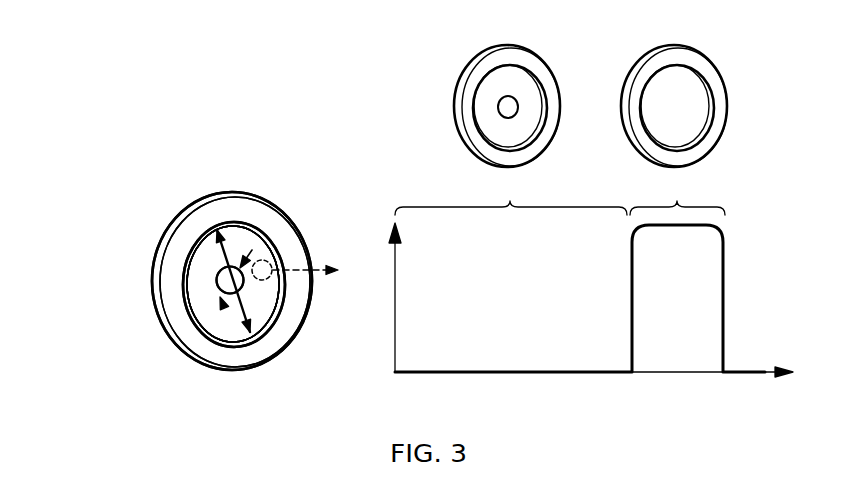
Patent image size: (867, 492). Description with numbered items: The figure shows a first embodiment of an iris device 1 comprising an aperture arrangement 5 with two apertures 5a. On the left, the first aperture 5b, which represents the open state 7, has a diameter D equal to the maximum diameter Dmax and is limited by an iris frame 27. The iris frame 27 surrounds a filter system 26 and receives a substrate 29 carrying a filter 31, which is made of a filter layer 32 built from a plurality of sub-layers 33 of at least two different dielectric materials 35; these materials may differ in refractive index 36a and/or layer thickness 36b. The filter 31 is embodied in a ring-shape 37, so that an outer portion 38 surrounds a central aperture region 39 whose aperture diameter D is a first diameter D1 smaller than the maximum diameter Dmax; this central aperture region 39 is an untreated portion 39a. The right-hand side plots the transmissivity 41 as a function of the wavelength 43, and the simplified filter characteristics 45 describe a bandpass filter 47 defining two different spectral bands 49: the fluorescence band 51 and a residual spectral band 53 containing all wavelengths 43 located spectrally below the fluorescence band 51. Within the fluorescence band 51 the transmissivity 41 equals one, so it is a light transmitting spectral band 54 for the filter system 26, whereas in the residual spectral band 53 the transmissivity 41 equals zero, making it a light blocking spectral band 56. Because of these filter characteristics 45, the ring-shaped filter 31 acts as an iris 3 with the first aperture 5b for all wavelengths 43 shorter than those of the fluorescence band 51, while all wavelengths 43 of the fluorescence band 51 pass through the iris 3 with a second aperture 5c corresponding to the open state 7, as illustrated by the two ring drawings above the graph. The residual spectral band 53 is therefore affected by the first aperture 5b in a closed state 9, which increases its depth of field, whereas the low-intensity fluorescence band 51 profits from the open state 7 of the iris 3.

The iris device 1 is at (214, 160).
The iris 3 is at (474, 216).
The aperture arrangement 5 is at (237, 335).
The apertures 5a is at (246, 313).
The first aperture 5b is at (391, 179).
The second aperture 5c is at (714, 73).
The open state 7 is at (474, 216).
The closed state 9 is at (547, 73).
The filter system 26 is at (257, 210).
The iris frame 27 is at (208, 213).
The substrate 29 is at (291, 257).
The filter 31 is at (291, 257).
The filter layer 32 is at (181, 281).
The sub-layers 33 is at (183, 305).
The dielectric materials 35 is at (183, 305).
The refractive index 36a is at (181, 281).
The layer thickness 36b is at (197, 255).
The ring-shape 37 is at (291, 257).
The outer portion 38 is at (270, 251).
The central aperture region 39 is at (152, 311).
The untreated portion 39a is at (216, 299).
The transmissivity 41 is at (393, 297).
The wavelength 43 is at (592, 374).
The filter characteristics 45 is at (725, 262).
The bandpass filter 47 is at (208, 316).
The spectral bands 49 is at (511, 192).
The fluorescence band 51 is at (677, 192).
The residual spectral band 53 is at (511, 192).
The light transmitting spectral band 54 is at (677, 192).
The light blocking spectral band 56 is at (511, 192).
The diameter D is at (159, 281).
The maximum diameter Dmax is at (225, 258).
The first diameter D1 is at (224, 306).